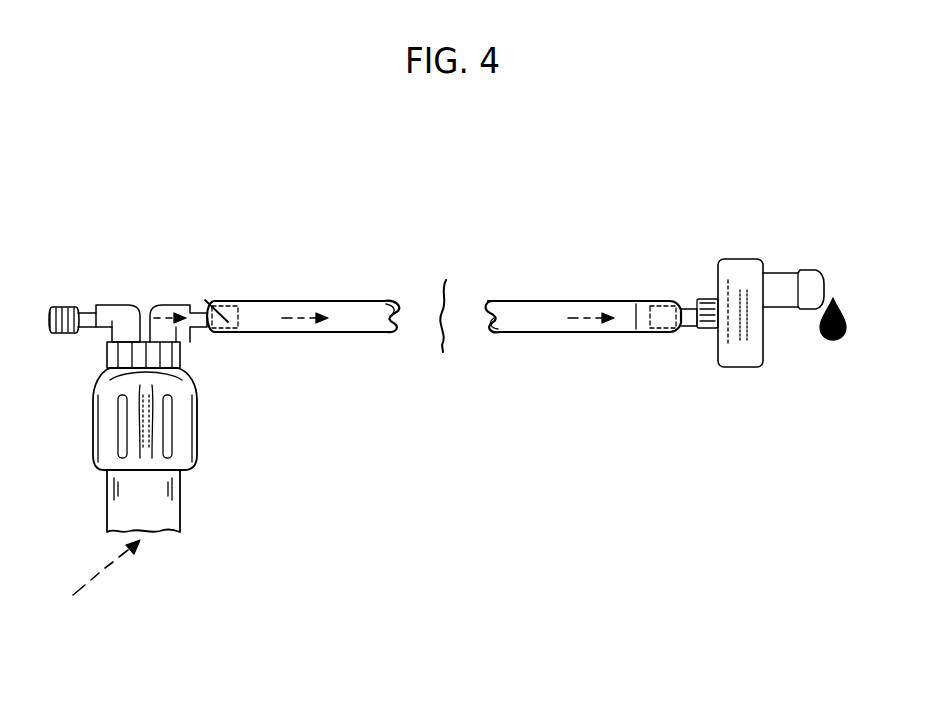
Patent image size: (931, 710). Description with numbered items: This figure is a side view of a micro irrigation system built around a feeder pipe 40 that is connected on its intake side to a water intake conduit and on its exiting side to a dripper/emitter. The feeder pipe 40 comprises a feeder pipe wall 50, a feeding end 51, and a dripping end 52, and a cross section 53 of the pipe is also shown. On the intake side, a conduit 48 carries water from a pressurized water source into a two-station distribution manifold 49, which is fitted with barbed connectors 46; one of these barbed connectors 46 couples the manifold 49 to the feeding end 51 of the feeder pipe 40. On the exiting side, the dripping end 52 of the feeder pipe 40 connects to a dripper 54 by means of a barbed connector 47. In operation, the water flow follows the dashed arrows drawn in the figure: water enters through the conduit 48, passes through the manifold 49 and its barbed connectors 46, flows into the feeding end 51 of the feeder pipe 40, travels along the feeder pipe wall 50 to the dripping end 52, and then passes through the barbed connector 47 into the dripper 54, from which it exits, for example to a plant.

The feeder pipe 40 is at (261, 272).
The barbed connectors 46 is at (203, 298).
The barbed connector 47 is at (660, 318).
The conduit 48 is at (143, 498).
The manifold 49 is at (150, 428).
The feeder pipe wall 50 is at (316, 298).
The feeding end 51 is at (248, 320).
The dripping end 52 is at (632, 318).
The cross section 53 is at (393, 327).
The dripper 54 is at (735, 285).